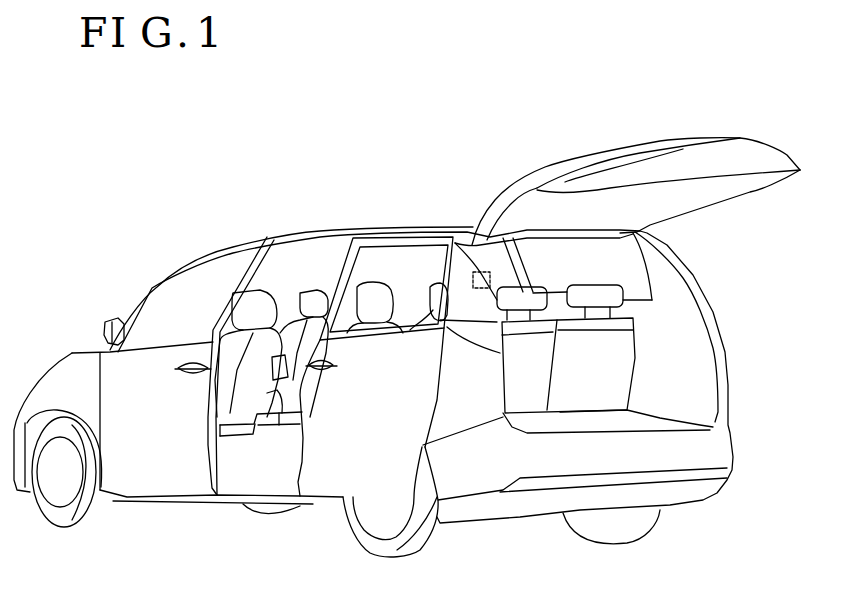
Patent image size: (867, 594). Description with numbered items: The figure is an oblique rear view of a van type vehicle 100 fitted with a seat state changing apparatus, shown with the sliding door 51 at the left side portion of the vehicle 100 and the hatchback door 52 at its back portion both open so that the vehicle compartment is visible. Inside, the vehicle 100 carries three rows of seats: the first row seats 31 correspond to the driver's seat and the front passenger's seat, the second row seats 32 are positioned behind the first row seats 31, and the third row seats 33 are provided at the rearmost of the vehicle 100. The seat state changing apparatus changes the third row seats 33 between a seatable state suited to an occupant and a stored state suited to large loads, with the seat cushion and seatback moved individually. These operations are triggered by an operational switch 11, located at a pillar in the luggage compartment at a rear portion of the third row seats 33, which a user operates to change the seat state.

The vehicle 100 is at (397, 153).
The operational switch 11 is at (490, 280).
The first row seats 31 is at (315, 297).
The second row seats 32 is at (437, 287).
The third row seats 33 is at (523, 402).
The sliding door 51 is at (333, 488).
The hatchback door 52 is at (675, 138).